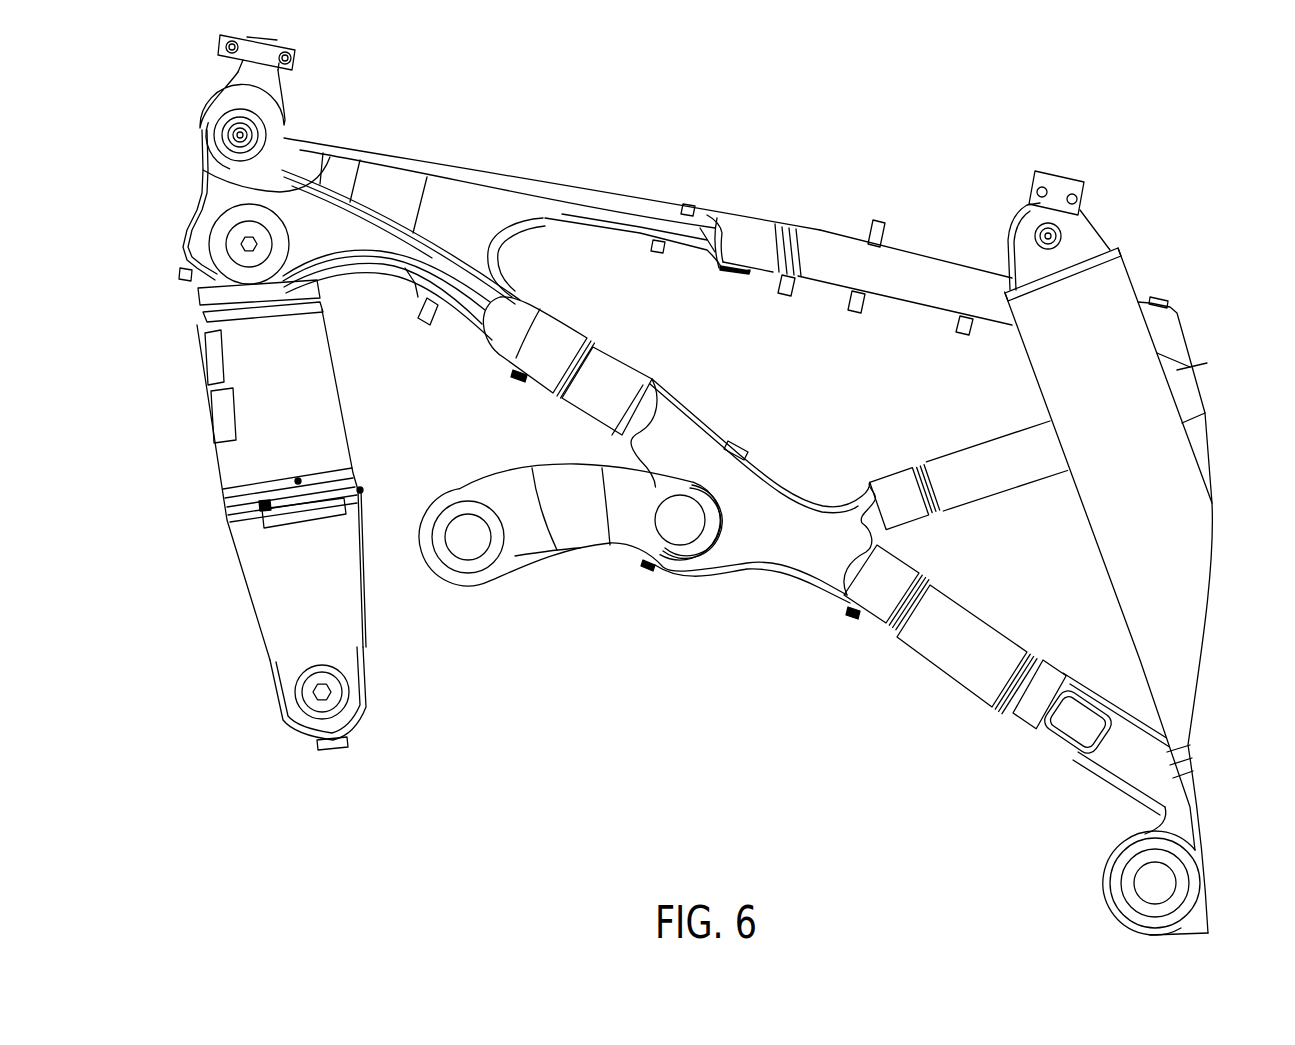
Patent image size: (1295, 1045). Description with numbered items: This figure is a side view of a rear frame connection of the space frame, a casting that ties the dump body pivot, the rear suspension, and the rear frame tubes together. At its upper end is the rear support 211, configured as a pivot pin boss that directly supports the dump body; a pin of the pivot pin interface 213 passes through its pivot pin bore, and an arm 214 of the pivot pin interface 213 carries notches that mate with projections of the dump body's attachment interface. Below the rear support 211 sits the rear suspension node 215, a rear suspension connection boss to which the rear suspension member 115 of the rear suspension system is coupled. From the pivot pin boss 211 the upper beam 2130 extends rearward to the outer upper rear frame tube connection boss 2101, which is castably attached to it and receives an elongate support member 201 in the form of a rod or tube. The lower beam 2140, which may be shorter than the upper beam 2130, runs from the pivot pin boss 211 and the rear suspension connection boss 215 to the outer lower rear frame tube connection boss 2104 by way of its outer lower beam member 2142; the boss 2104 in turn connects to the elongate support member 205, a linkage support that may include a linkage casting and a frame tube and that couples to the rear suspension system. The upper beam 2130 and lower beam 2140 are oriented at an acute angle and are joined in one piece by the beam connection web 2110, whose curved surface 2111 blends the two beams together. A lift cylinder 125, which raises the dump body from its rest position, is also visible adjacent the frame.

The rear suspension member 115 is at (227, 460).
The lift cylinder 125 is at (1120, 290).
The elongate support member 201 is at (823, 250).
The elongate support member 205 is at (617, 377).
The rear support 211 is at (207, 115).
The pivot pin interface 213 is at (210, 140).
The arm 214 is at (256, 79).
The rear suspension node 215 is at (192, 242).
The outer upper rear frame tube connection boss 2101 is at (757, 233).
The outer lower rear frame tube connection boss 2104 is at (560, 337).
The beam connection web 2110 is at (455, 207).
The curved surface 2111 is at (513, 243).
The upper beam 2130 is at (600, 205).
The lower beam 2140 is at (462, 317).
The outer lower beam member 2142 is at (420, 267).